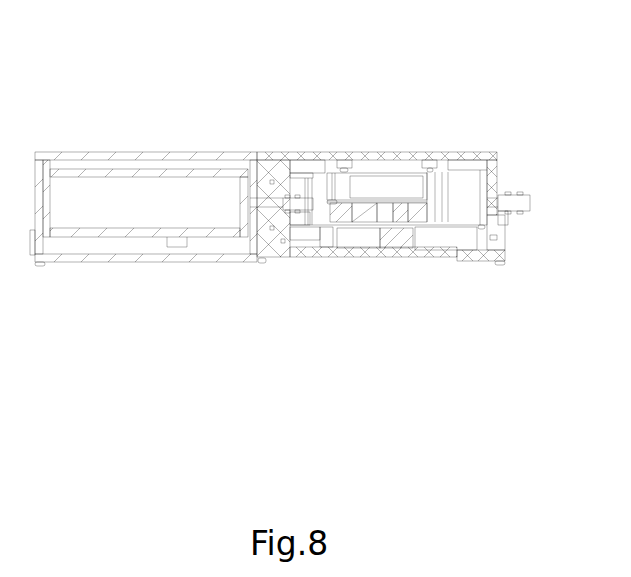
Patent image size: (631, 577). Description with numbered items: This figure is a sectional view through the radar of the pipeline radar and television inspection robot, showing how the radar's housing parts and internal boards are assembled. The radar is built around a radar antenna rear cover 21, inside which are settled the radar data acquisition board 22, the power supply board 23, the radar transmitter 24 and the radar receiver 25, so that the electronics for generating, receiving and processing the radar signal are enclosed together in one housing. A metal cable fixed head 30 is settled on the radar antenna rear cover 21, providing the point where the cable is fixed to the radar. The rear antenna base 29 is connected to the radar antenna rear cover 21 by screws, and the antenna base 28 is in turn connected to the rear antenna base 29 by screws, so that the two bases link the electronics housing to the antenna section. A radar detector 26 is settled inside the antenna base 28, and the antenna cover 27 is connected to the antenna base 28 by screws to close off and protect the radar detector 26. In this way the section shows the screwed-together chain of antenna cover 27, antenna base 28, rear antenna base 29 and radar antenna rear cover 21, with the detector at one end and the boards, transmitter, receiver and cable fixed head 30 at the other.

The radar antenna rear cover 21 is at (465, 269).
The radar data acquisition board 22 is at (423, 250).
The power supply board 23 is at (364, 227).
The radar transmitter 24 is at (378, 174).
The radar receiver 25 is at (299, 253).
The radar detector 26 is at (158, 250).
The antenna cover 27 is at (88, 274).
The antenna base 28 is at (112, 138).
The rear antenna base 29 is at (309, 139).
The metal cable fixed head 30 is at (526, 180).